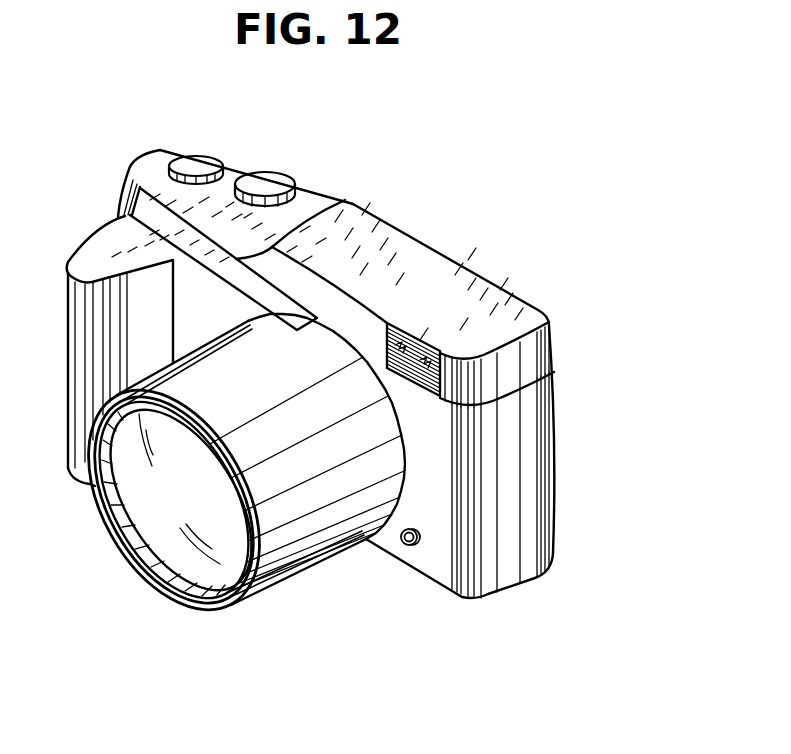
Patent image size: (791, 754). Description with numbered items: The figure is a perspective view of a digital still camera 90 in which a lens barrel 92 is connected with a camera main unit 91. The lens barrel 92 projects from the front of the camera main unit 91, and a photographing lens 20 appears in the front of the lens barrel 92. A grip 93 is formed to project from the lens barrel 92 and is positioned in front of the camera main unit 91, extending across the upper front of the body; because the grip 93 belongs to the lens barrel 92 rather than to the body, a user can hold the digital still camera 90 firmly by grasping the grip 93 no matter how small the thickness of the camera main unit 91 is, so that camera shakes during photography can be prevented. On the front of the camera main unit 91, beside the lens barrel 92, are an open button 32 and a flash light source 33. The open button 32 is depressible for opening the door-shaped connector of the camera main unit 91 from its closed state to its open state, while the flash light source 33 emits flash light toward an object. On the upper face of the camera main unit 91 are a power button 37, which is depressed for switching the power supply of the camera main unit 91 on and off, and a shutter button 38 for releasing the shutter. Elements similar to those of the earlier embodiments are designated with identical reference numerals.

The digital still camera 90 is at (560, 218).
The camera main unit 91 is at (452, 242).
The lens barrel 92 is at (282, 597).
The grip 93 is at (107, 247).
The photographing lens 20 is at (168, 545).
The open button 32 is at (412, 552).
The flash light source 33 is at (406, 347).
The power button 37 is at (275, 175).
The shutter button 38 is at (197, 158).